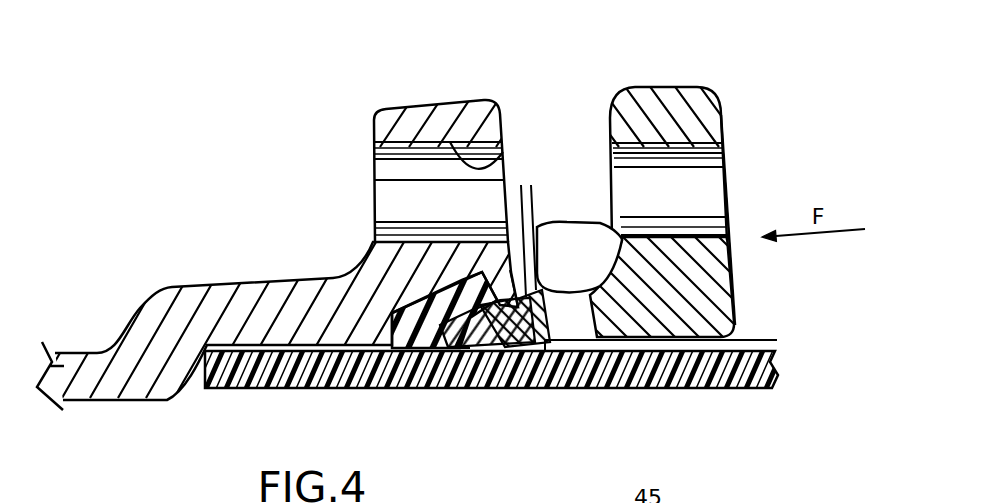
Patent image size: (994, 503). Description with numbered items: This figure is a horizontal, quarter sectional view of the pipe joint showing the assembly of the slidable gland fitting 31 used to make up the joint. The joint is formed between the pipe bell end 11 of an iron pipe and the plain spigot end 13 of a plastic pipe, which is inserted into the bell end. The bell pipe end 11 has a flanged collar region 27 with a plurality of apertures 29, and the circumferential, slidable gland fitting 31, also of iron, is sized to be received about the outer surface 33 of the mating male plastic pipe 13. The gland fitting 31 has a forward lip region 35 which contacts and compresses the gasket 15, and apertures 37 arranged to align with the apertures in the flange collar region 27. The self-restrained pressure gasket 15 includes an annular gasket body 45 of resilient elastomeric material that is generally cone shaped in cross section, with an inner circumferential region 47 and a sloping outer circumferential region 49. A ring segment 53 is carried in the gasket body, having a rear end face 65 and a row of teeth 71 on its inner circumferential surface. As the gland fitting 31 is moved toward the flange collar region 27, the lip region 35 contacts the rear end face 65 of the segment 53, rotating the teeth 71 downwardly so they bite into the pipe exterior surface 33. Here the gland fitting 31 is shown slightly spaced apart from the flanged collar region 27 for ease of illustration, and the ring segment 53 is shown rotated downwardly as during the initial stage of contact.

The pipe bell end 11 is at (147, 283).
The plain spigot end 13 is at (519, 343).
The gasket 15 is at (539, 222).
The flanged collar region 27 is at (492, 112).
The apertures 29 is at (482, 162).
The slidable gland fitting 31 is at (709, 88).
The outer surface 33 is at (737, 348).
The forward lip region 35 is at (543, 248).
The apertures 37 is at (735, 158).
The annular gasket body 45 is at (530, 200).
The inner circumferential region 47 is at (390, 346).
The sloping outer circumferential region 49 is at (473, 313).
The ring segment 53 is at (503, 313).
The rear end face 65 is at (590, 320).
The row of teeth 71 is at (483, 345).